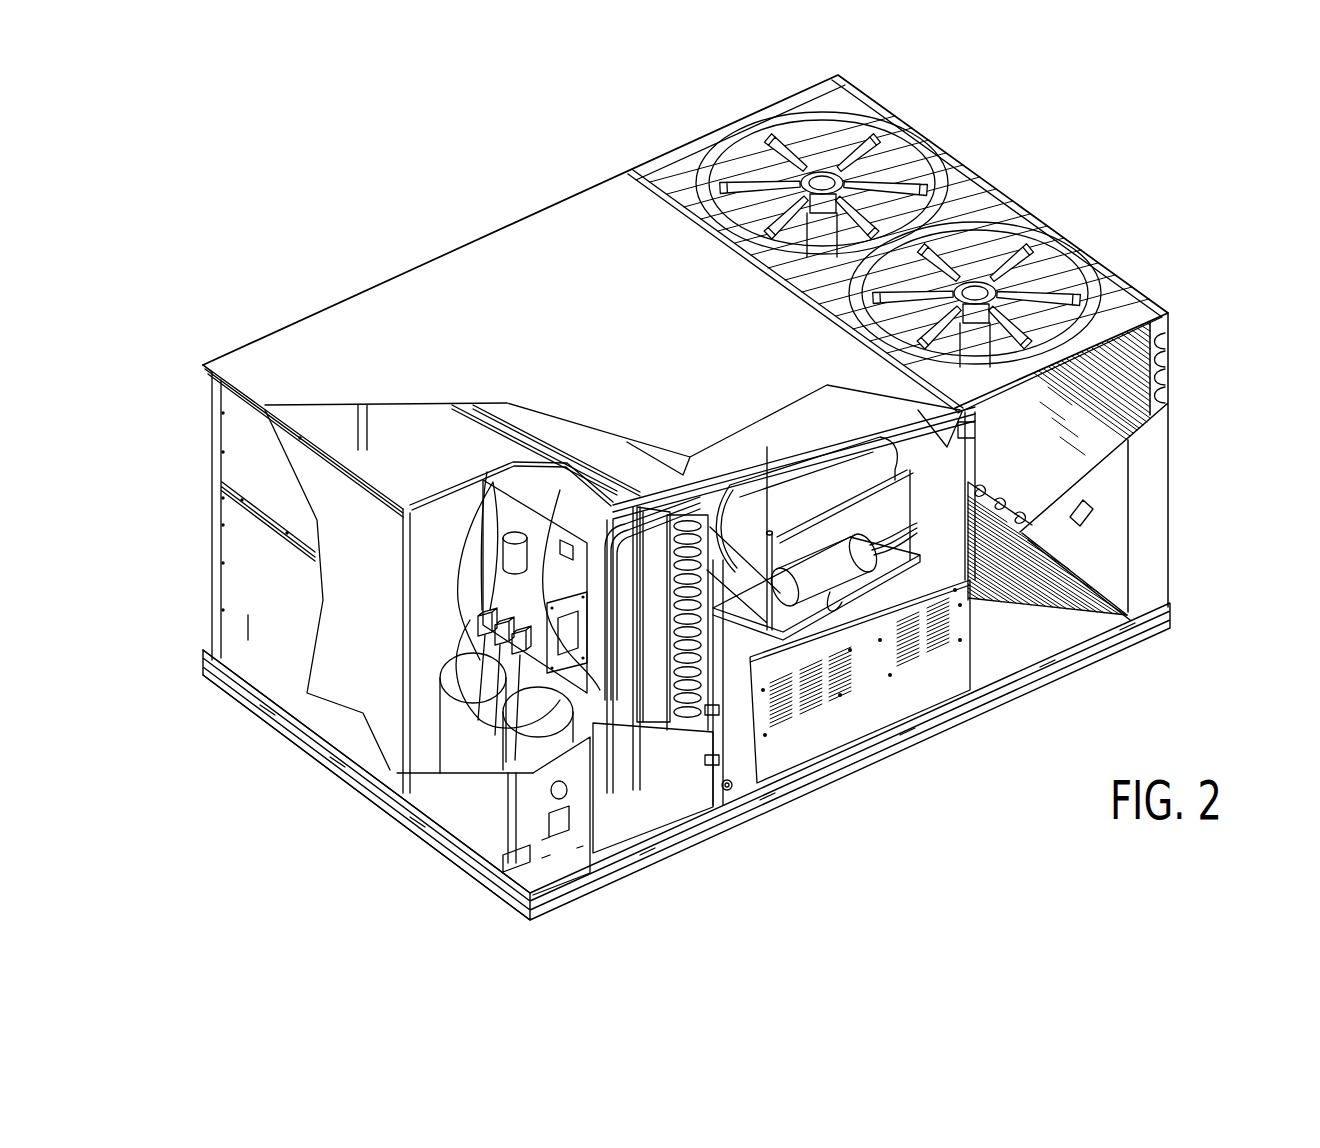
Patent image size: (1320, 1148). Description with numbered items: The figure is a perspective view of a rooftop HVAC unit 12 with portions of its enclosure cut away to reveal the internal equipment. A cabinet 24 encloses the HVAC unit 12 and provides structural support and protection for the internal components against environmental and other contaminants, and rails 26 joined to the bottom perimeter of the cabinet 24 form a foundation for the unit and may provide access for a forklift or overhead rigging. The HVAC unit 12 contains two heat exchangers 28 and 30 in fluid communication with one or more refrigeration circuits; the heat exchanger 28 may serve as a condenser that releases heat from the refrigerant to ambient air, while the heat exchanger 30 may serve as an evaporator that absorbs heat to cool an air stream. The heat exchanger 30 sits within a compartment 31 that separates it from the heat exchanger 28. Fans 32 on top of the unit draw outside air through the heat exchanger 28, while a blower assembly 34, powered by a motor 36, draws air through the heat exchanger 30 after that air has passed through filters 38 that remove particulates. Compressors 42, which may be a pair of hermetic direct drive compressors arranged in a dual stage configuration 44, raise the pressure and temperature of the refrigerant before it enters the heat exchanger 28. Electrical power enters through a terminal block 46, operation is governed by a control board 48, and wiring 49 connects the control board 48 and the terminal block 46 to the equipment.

The HVAC unit 12 is at (401, 181).
The cabinet 24 is at (248, 628).
The rails 26 is at (270, 725).
The heat exchanger 28 is at (1166, 370).
The heat exchanger 30 is at (687, 708).
The compartment 31 is at (703, 560).
The fans 32 is at (1050, 235).
The blower assembly 34 is at (893, 512).
The motor 36 is at (825, 558).
The filters 38 is at (648, 543).
The compressors 42 is at (447, 713).
The dual stage configuration 44 is at (444, 664).
The terminal block 46 is at (553, 680).
The control board 48 is at (570, 625).
The wiring 49 is at (693, 537).